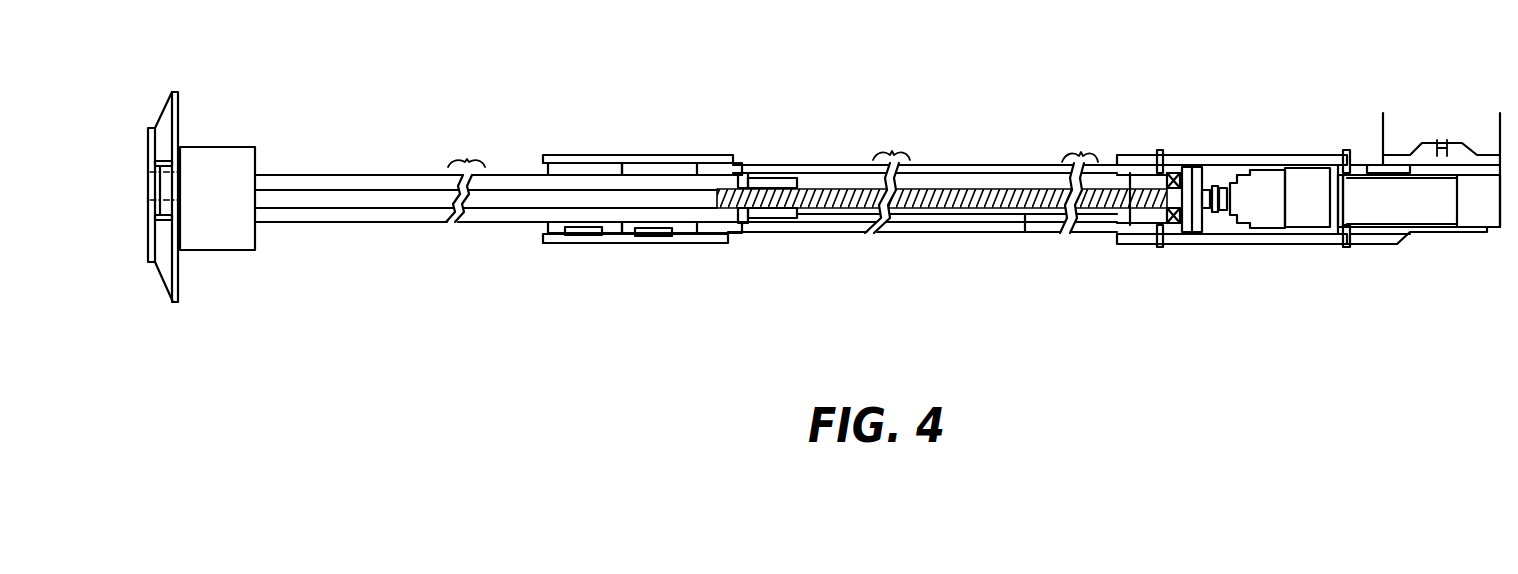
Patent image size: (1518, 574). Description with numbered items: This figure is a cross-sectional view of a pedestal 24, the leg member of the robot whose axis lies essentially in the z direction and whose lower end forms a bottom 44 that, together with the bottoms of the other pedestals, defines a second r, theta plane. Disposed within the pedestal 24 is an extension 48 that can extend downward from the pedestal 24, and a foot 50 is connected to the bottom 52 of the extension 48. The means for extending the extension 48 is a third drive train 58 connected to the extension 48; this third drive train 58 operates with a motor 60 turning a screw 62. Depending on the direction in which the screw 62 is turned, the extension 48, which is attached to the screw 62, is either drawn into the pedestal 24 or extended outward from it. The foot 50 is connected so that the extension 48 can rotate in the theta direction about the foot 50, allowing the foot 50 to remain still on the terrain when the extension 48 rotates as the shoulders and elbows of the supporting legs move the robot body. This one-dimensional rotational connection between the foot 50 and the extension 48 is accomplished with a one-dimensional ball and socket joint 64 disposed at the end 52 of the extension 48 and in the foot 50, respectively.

The pedestal 24 is at (952, 145).
The bottom 44 is at (537, 157).
The extension 48 is at (425, 223).
The foot 50 is at (178, 277).
The bottom of the extension 52 is at (257, 230).
The third drive train 58 is at (1213, 215).
The motor 60 is at (1305, 229).
The screw 62 is at (1025, 208).
The one-dimensional ball and socket joint 64 is at (215, 223).